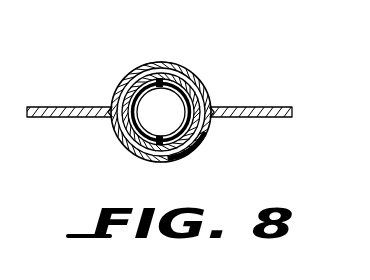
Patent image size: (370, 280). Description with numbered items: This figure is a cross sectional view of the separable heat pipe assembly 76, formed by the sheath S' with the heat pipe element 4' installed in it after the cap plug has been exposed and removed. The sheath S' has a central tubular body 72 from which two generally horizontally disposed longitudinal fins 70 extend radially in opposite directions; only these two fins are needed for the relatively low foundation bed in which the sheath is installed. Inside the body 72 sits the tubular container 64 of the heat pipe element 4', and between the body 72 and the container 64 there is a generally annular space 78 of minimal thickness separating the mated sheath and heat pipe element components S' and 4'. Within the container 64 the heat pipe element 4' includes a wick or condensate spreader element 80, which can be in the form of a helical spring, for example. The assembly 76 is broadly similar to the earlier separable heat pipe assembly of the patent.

The longitudinal fins 70 is at (267, 107).
The central tubular body 72 is at (203, 141).
The tubular container 64 is at (196, 80).
The annular space 78 is at (121, 84).
The wick or condensate spreader element 80 is at (161, 112).
The separable heat pipe assembly 76 is at (103, 135).
The sheath S' is at (122, 52).
The rod 4' is at (174, 43).